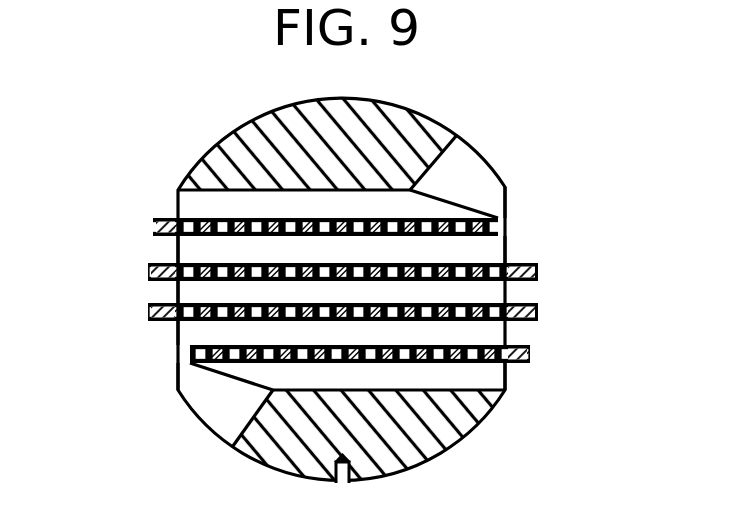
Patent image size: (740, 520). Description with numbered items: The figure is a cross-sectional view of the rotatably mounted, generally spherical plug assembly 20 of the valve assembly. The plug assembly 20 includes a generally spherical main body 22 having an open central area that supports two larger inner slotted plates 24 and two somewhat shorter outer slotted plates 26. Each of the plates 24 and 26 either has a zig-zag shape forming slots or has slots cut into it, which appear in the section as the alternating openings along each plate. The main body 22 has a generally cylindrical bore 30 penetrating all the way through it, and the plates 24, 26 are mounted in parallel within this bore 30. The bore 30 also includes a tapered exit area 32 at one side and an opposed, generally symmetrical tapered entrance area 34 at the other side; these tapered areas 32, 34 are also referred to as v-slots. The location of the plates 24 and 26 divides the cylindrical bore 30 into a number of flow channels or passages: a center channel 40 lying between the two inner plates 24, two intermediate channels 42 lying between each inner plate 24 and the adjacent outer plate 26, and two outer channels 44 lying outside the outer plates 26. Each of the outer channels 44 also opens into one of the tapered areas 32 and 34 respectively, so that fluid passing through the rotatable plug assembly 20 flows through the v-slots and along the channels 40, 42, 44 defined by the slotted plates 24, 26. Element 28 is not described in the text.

The spherical plug assembly 20 is at (473, 103).
The main body 22 is at (460, 432).
The inner slotted plates 24 is at (538, 270).
The outer slotted plates 26 is at (155, 226).
The separator 28 is at (487, 262).
The cylindrical bore 30 is at (507, 383).
The tapered exit area 32 is at (473, 163).
The tapered entrance area 34 is at (200, 415).
The center channel 40 is at (163, 293).
The intermediate channels 42 is at (173, 250).
The outer channels 44 is at (500, 182).